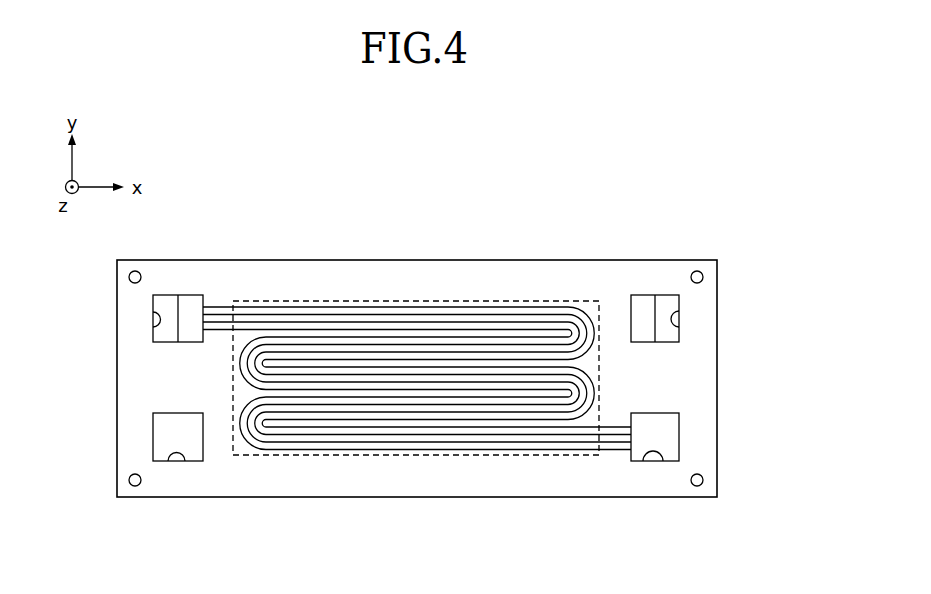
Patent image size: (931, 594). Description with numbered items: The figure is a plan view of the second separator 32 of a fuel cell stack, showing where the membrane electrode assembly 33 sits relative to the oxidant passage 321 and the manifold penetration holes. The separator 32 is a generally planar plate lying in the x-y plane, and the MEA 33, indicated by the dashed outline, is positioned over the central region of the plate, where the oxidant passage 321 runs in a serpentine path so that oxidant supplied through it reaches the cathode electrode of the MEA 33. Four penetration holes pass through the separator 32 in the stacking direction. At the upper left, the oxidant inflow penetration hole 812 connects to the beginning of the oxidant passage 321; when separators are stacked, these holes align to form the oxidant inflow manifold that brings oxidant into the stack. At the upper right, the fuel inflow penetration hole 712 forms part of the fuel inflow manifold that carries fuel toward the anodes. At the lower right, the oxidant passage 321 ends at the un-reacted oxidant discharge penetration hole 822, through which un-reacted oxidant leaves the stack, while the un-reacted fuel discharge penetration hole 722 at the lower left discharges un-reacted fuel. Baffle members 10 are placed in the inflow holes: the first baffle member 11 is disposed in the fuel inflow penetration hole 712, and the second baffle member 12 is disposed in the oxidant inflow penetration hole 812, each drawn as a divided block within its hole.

The terminal electrodes 10 is at (423, 274).
The first baffle member 11 is at (665, 302).
The second baffle member 12 is at (189, 302).
The second separator 32 is at (702, 411).
The membrane electrode assembly 33 is at (599, 363).
The oxidant passage 321 is at (491, 322).
The fuel inflow penetration hole 712 is at (679, 311).
The oxidant inflow penetration hole 812 is at (153, 312).
The un-reacted fuel discharge penetration hole 722 is at (185, 461).
The un-reacted oxidant discharge penetration hole 822 is at (663, 461).